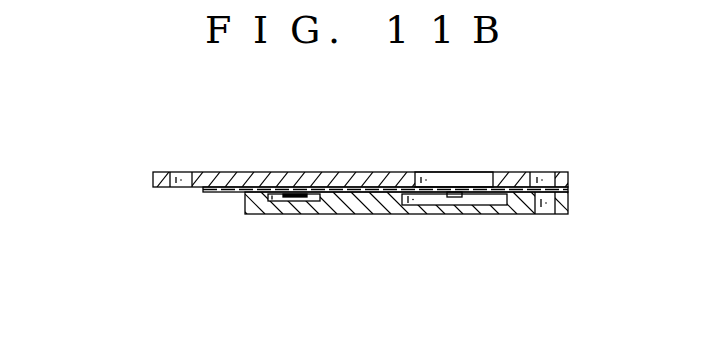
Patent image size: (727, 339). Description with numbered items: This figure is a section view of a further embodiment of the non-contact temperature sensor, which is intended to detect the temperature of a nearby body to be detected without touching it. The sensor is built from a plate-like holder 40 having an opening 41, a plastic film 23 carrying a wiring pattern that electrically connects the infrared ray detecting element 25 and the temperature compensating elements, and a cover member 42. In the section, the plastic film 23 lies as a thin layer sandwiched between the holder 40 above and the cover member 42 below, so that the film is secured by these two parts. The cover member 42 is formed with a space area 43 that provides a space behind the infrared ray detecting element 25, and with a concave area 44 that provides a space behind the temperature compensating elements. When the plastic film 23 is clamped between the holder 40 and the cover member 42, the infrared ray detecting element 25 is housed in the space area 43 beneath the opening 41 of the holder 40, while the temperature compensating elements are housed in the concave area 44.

The plate-like holder 40 is at (239, 172).
The plastic film 23 is at (392, 172).
The opening 41 is at (470, 178).
The cover member 42 is at (350, 204).
The space area 43 is at (425, 198).
The concave area 44 is at (278, 198).
The infrared ray detecting element 25 is at (455, 198).